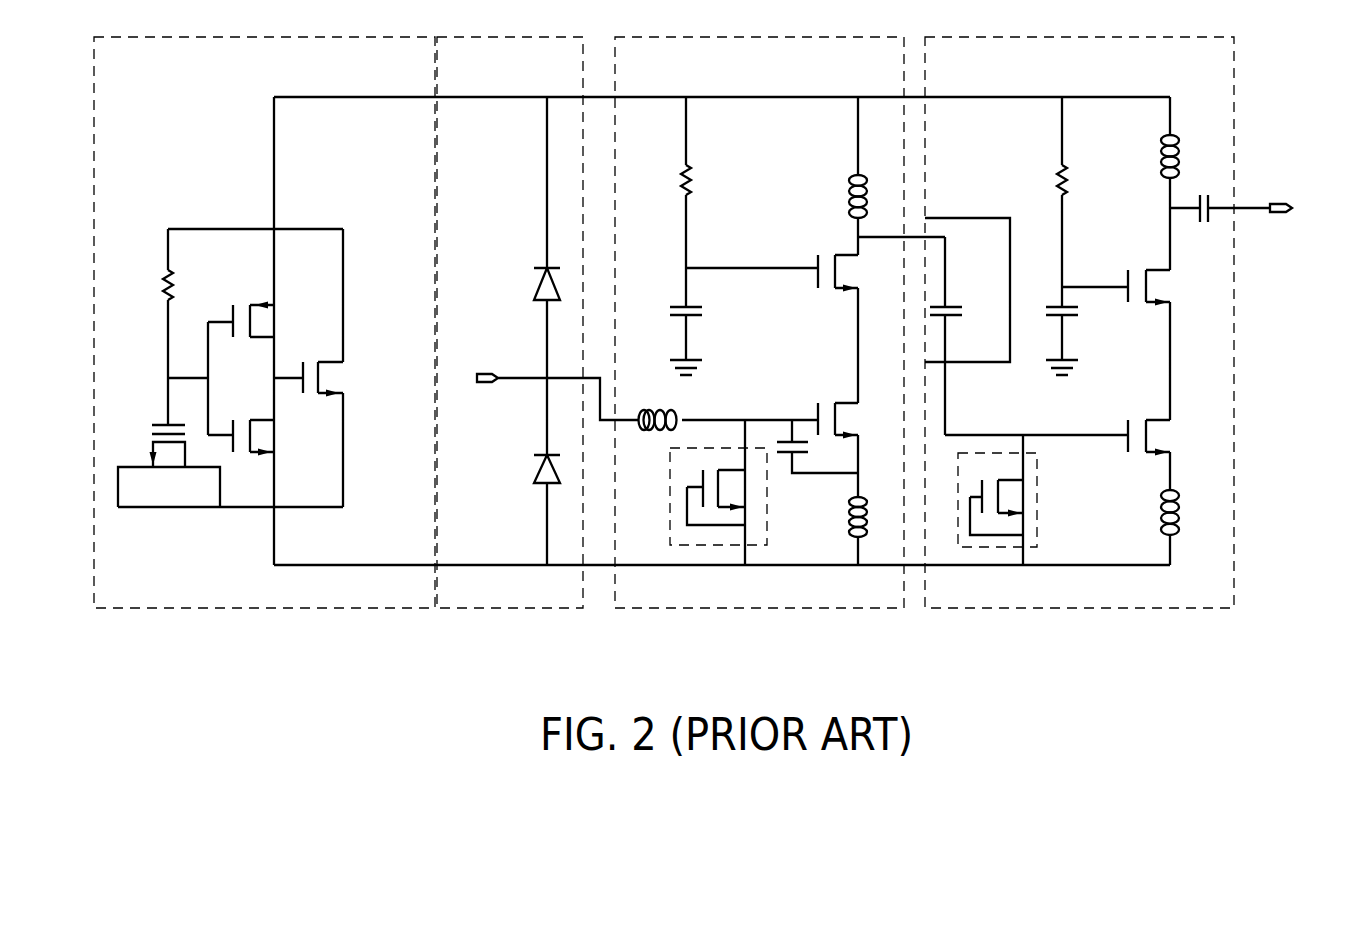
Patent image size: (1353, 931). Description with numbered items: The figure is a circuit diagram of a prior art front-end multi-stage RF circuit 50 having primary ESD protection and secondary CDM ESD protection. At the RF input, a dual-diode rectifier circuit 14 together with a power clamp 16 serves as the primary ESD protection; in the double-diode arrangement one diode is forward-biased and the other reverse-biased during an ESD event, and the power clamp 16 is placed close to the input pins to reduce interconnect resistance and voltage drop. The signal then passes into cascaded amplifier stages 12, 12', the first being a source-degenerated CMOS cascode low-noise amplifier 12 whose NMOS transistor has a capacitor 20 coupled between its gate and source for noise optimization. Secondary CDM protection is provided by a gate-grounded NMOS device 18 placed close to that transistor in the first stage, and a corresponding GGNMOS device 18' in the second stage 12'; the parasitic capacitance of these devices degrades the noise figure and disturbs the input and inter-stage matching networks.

The multi-stage RF circuit 50 is at (1096, 680).
The power clamp 16 is at (233, 35).
The dual-diode rectifier circuit 14 is at (498, 35).
The low-noise amplifier 12 is at (780, 304).
The amplifier stage 12' is at (1124, 304).
The gate-grounded NMOS device 18 is at (718, 548).
The gate-grounded NMOS device 18' is at (997, 546).
The capacitor 20 is at (802, 455).